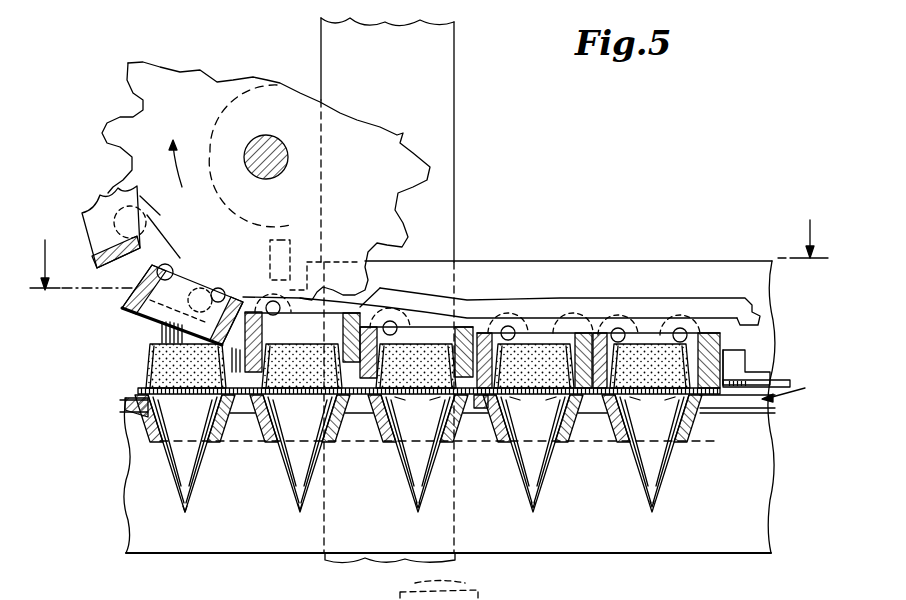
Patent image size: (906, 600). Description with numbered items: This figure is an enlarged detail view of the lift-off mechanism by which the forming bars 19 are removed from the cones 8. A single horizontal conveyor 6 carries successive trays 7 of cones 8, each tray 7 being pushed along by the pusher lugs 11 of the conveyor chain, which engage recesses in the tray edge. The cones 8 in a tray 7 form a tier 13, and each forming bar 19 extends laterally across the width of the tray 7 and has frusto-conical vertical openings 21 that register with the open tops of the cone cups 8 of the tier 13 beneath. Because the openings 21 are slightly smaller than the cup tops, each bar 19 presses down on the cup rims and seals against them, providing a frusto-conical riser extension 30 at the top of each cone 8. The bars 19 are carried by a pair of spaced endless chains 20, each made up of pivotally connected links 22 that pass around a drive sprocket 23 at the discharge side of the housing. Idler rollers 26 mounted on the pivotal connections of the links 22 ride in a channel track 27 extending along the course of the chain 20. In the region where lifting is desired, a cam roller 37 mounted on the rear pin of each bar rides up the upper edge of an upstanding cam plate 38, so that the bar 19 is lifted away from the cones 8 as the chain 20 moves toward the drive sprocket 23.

The conveyor 6 is at (429, 311).
The tray 7 is at (125, 415).
The cone 8 is at (165, 463).
The pusher lug 11 is at (483, 408).
The tier 13 is at (296, 515).
The forming bar 19 is at (122, 278).
The endless chain 20 is at (172, 234).
The frusto-conical vertical opening 21 is at (213, 292).
The link 22 is at (430, 325).
The drive sprocket 23 is at (368, 183).
The idler roller 26 is at (562, 328).
The channel track 27 is at (760, 332).
The frusto-conical riser extension 30 is at (150, 360).
The cam roller 37 is at (536, 406).
The cam plate 38 is at (160, 334).